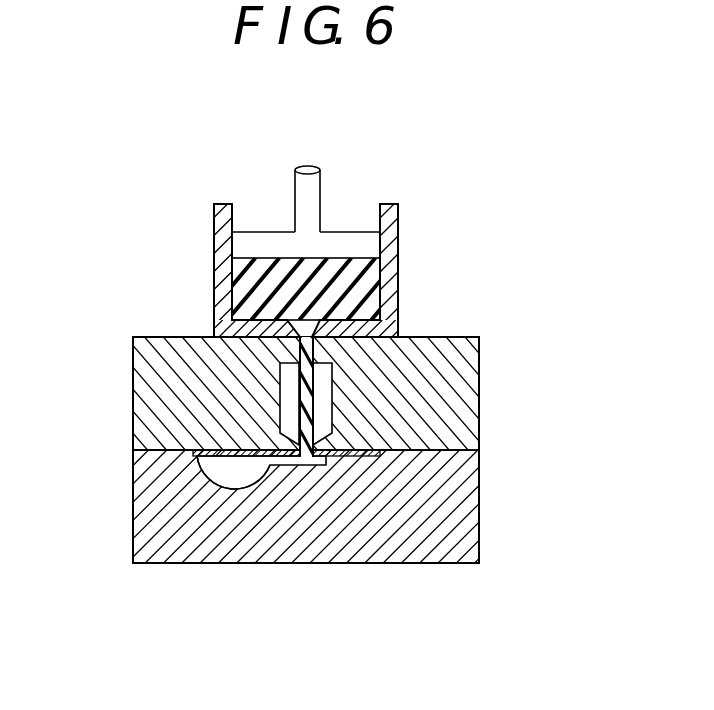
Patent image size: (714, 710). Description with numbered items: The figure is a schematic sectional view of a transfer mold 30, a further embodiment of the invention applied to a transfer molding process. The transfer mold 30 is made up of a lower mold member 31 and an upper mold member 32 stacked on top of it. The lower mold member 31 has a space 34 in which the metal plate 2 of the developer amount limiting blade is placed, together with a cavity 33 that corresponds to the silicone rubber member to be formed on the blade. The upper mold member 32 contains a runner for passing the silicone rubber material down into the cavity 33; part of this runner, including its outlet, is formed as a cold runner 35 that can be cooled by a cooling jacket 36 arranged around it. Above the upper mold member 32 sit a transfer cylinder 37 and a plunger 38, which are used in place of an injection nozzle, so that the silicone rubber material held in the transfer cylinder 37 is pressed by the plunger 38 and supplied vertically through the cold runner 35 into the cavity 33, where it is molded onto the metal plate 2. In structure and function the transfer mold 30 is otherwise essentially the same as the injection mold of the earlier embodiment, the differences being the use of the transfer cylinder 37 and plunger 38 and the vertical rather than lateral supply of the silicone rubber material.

The transfer mold 30 is at (433, 218).
The lower mold member 31 is at (445, 515).
The upper mold member 32 is at (447, 423).
The cavity 33 is at (231, 478).
The space 34 is at (194, 455).
The cold runner 35 is at (315, 405).
The cooling jacket 36 is at (325, 383).
The transfer cylinder 37 is at (216, 258).
The plunger 38 is at (270, 245).
The metal plate 2 is at (362, 457).